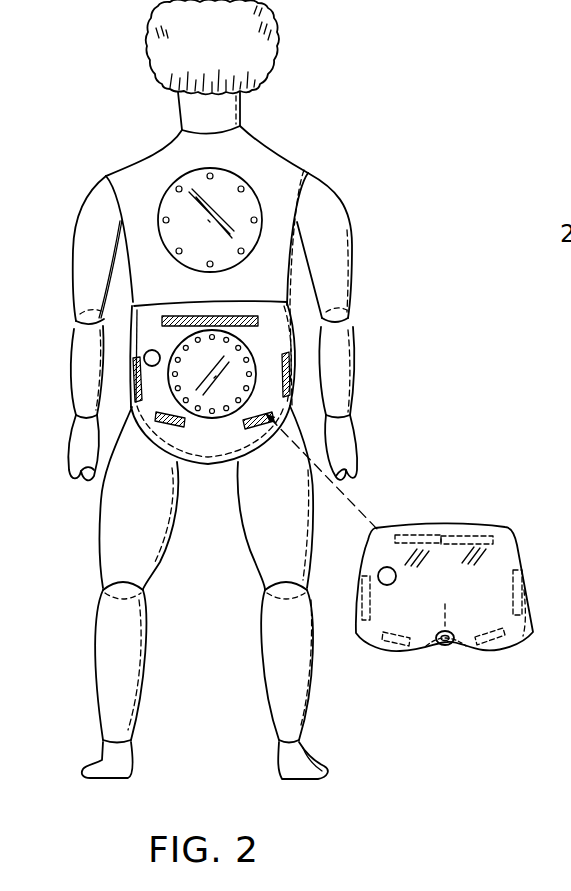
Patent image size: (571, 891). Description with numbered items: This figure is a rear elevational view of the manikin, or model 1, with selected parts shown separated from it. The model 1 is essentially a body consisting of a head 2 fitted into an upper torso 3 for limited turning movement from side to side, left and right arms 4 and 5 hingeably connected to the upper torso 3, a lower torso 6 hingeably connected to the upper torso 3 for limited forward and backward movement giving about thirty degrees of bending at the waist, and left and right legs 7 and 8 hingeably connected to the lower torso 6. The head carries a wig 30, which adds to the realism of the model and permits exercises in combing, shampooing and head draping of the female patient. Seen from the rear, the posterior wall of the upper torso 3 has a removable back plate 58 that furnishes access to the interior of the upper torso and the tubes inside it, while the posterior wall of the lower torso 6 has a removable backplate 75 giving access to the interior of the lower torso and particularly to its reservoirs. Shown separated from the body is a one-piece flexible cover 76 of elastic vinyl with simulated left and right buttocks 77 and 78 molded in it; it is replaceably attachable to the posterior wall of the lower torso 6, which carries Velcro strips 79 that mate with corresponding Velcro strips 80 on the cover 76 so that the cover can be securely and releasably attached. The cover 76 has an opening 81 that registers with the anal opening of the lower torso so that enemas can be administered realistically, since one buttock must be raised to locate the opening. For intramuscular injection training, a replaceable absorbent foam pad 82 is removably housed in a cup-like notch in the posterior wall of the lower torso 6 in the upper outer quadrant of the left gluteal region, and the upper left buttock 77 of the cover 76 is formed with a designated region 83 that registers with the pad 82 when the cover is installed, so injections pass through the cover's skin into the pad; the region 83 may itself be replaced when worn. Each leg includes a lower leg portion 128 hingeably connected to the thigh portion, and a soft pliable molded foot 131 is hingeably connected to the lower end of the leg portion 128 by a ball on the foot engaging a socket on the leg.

The model 1 is at (150, 132).
The head 2 is at (246, 111).
The upper torso 3 is at (294, 158).
The left arm 4 is at (73, 228).
The right arm 5 is at (353, 238).
The lower torso 6 is at (126, 388).
The left leg 7 is at (146, 556).
The right leg 8 is at (260, 537).
The wig 30 is at (255, 42).
The removable back plate 58 is at (235, 212).
The removable backplate 75 is at (234, 368).
The flexible cover 76 is at (416, 521).
The left buttock 77 is at (441, 632).
The right buttock 78 is at (450, 632).
The Velcro strips 79 is at (223, 318).
The Velcro strips 80 is at (447, 538).
The opening 81 is at (450, 647).
The absorbent foam pad 82 is at (147, 352).
The designated region 83 is at (381, 569).
The lower leg portion 128 is at (278, 672).
The foot 131 is at (290, 757).